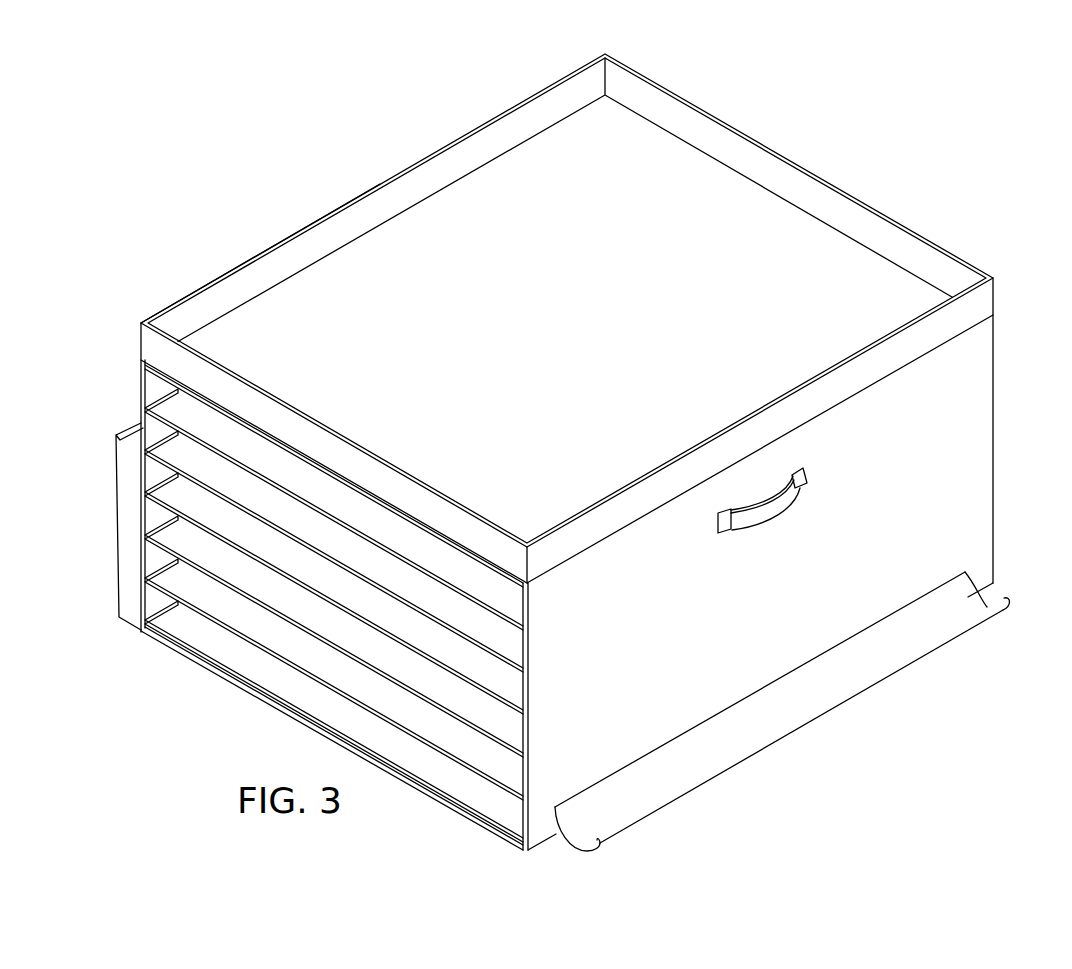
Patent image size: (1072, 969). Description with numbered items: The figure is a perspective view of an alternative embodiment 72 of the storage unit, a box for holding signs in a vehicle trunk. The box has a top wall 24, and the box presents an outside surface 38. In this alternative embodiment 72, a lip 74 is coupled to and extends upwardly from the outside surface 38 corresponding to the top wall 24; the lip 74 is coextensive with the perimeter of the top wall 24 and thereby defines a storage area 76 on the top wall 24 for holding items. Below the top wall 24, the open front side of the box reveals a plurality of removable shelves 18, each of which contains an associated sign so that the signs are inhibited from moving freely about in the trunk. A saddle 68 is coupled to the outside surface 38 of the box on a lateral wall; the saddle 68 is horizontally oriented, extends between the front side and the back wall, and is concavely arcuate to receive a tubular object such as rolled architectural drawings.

The alternative embodiment 72 is at (250, 102).
The top wall 24 is at (567, 318).
The storage area 76 is at (676, 104).
The outside surface 38 is at (768, 246).
The lip 74 is at (237, 265).
The removable shelves 18 is at (217, 537).
The saddle 68 is at (745, 762).